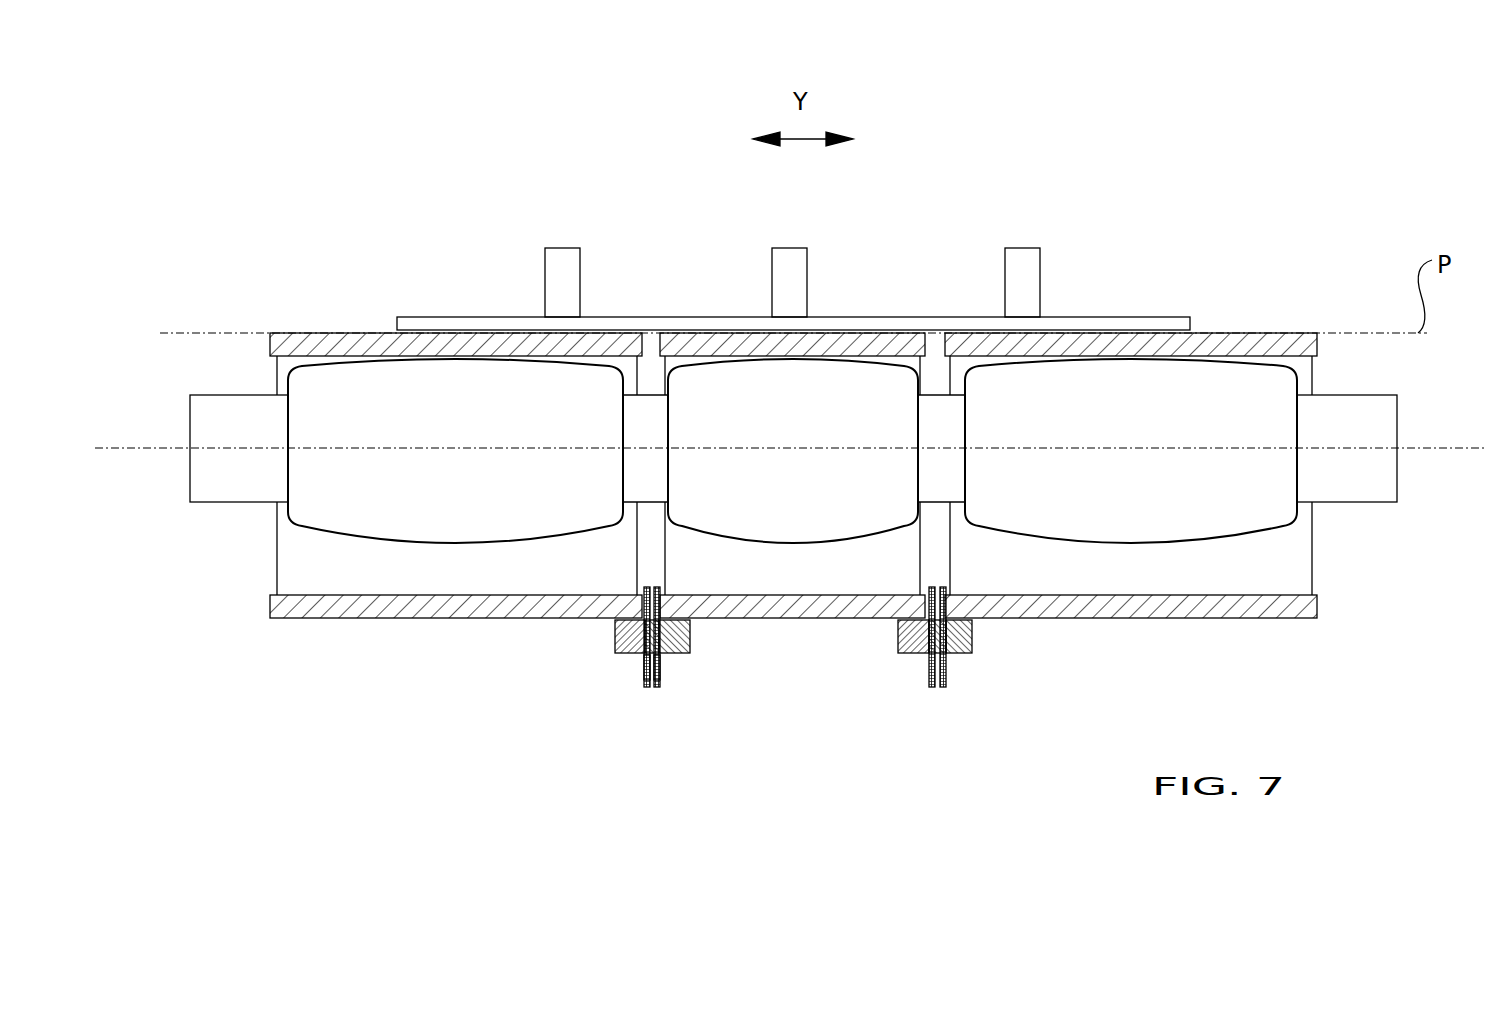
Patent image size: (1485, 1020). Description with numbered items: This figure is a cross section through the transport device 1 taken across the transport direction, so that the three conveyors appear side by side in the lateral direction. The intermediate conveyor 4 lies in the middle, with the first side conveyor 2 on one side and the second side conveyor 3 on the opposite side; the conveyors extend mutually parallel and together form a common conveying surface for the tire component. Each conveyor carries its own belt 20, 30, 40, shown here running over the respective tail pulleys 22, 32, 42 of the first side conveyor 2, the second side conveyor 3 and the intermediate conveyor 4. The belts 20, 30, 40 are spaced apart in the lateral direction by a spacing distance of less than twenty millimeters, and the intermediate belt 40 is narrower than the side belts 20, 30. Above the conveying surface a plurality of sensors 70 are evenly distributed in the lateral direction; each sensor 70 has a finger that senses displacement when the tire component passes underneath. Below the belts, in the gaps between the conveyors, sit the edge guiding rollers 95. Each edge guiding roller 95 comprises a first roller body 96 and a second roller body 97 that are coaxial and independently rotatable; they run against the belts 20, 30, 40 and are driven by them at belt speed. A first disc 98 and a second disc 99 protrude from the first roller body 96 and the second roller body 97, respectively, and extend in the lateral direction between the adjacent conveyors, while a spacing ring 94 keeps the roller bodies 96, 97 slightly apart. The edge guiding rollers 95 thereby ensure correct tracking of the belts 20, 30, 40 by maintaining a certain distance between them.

The transport device 1 is at (255, 168).
The first side conveyor 2 is at (275, 557).
The second side conveyor 3 is at (1302, 528).
The intermediate conveyor 4 is at (838, 577).
The belt 20 is at (273, 608).
The tail pulley 22 is at (422, 527).
The belt 30 is at (1318, 607).
The tail pulley 32 is at (1213, 523).
The belt 40 is at (805, 613).
The tail pulley 42 is at (835, 518).
The sensor 70 is at (780, 268).
The spacing ring 94 is at (658, 672).
The edge guiding roller 95 is at (600, 667).
The first roller body 96 is at (615, 636).
The second roller body 97 is at (690, 638).
The first disc 98 is at (645, 680).
The second disc 99 is at (659, 665).